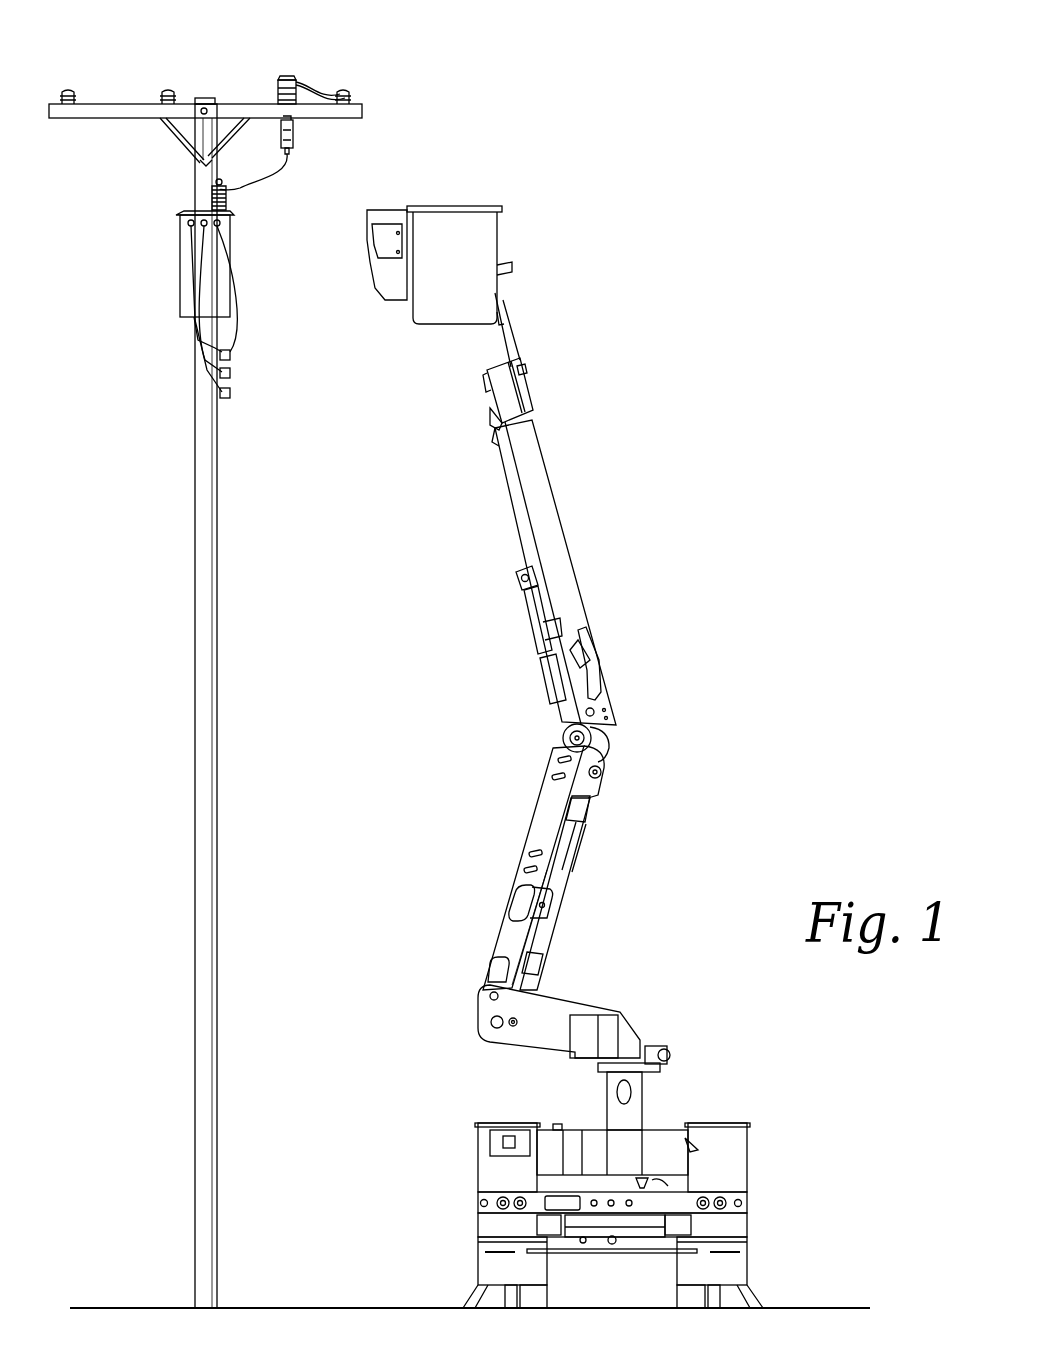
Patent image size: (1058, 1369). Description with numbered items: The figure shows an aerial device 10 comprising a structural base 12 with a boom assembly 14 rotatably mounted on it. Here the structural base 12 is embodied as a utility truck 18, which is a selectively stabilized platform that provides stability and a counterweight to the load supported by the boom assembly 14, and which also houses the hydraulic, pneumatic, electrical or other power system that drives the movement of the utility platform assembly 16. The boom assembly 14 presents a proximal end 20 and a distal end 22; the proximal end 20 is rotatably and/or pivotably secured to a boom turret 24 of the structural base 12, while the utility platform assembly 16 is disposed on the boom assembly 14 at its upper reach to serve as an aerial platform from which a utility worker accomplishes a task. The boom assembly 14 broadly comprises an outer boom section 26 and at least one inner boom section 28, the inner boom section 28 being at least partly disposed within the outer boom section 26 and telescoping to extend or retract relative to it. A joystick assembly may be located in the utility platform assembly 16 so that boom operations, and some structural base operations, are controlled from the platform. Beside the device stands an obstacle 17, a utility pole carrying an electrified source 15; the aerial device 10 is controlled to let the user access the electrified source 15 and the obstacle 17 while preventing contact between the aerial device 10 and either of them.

The aerial device 10 is at (627, 272).
The structural base 12 is at (665, 1173).
The boom assembly 14 is at (670, 668).
The electrified source 15 is at (296, 82).
The utility platform assembly 16 is at (508, 172).
The obstacle 17 is at (100, 104).
The utility truck 18 is at (738, 1173).
The proximal end 20 is at (503, 932).
The distal end 22 is at (505, 323).
The boom turret 24 is at (555, 1003).
The outer boom section 26 is at (540, 460).
The inner boom section 28 is at (488, 360).